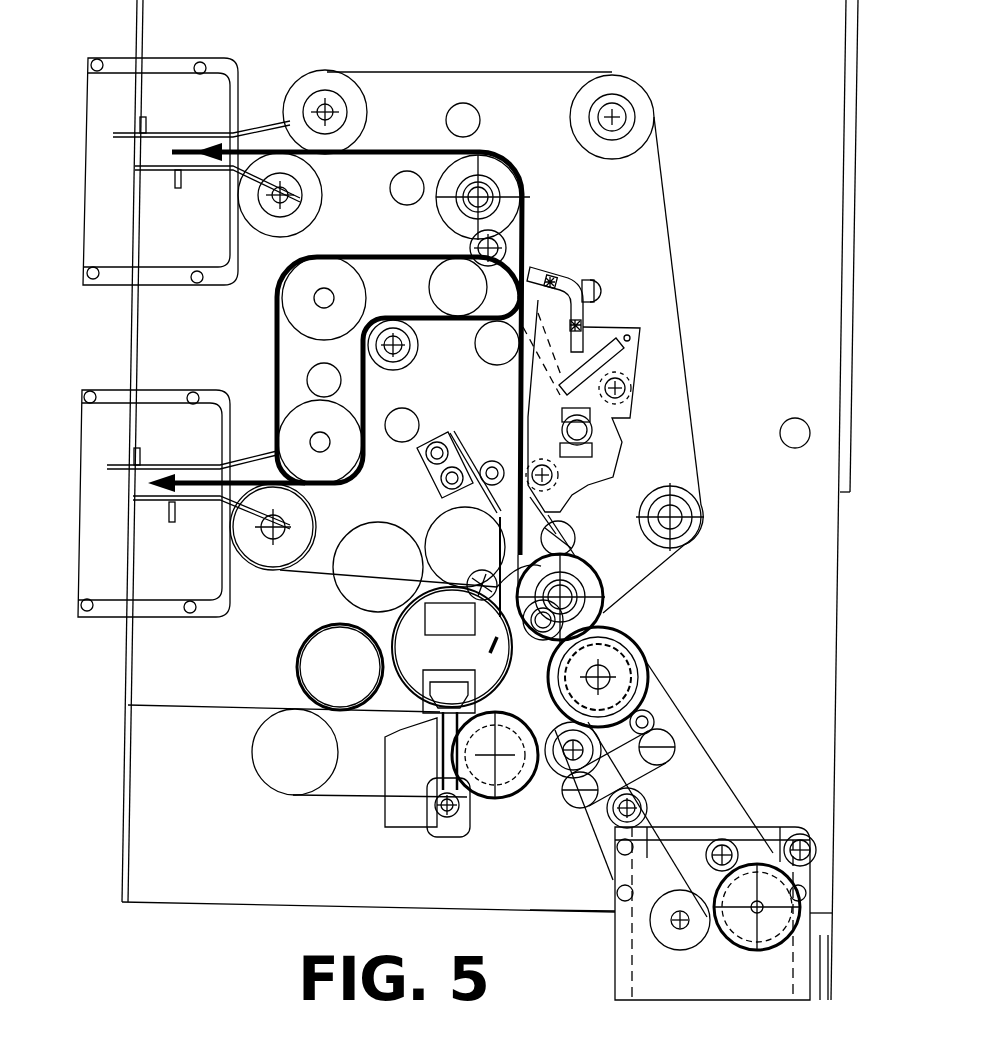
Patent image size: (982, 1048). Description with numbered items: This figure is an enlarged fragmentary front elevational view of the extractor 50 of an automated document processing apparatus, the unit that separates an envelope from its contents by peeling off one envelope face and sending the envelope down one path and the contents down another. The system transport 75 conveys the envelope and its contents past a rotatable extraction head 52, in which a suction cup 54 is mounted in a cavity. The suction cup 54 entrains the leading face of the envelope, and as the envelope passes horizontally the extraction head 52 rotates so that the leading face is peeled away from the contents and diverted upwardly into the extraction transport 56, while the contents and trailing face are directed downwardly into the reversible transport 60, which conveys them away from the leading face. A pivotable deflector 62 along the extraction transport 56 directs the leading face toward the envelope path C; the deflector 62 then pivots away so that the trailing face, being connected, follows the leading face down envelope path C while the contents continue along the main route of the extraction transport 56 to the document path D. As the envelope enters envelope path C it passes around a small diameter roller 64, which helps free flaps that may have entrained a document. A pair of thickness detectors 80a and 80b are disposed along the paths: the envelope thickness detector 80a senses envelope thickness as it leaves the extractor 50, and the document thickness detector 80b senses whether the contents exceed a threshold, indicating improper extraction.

The extractor 50 is at (712, 156).
The extraction head 52 is at (418, 652).
The suction cup 54 is at (413, 720).
The extraction transport 56 is at (513, 428).
The reversible transport 60 is at (688, 766).
The pivotable deflector 62 is at (570, 288).
The small diameter roller 64 is at (497, 345).
The system transport 75 is at (267, 768).
The envelope thickness detector 80a is at (100, 525).
The document thickness detector 80b is at (100, 237).
The envelope path C is at (367, 447).
The document path D is at (532, 237).